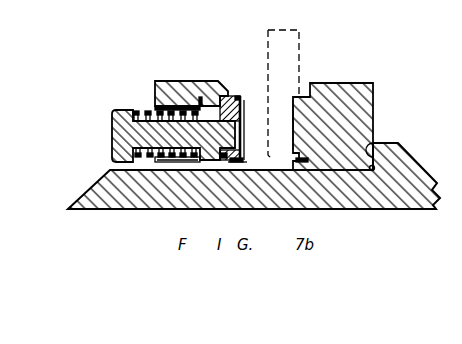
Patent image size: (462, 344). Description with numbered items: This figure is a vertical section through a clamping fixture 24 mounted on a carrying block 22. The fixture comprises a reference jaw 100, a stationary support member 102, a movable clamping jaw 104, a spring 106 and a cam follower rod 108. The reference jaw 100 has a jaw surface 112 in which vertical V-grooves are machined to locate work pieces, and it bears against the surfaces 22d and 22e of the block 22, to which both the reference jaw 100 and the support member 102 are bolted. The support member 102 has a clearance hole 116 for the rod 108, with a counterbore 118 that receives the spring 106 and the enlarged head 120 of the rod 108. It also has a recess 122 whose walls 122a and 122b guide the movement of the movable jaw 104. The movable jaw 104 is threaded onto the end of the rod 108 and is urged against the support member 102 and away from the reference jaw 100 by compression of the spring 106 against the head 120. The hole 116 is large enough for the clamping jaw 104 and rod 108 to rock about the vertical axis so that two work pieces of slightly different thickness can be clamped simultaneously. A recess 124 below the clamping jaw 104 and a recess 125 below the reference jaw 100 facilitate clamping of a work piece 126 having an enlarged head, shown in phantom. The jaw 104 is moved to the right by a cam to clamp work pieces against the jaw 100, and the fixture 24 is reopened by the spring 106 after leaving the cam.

The carrying block 22 is at (407, 170).
The surface of the block 22d is at (370, 168).
The surface of the block 22e is at (367, 146).
The clamping fixture 24 is at (383, 84).
The reference jaw 100 is at (347, 88).
The support member 102 is at (172, 81).
The movable clamping jaw 104 is at (240, 98).
The spring 106 is at (145, 112).
The cam follower rod 108 is at (150, 154).
The jaw surface 112 is at (299, 141).
The clearance hole 116 is at (197, 157).
The counterbore 118 is at (202, 103).
The enlarged head 120 is at (113, 117).
The recess 122 is at (241, 116).
The wall of the recess 122a is at (238, 96).
The wall of the recess 122b is at (243, 162).
The recess below the clamping jaw 124 is at (238, 163).
The recess below the reference jaw 125 is at (302, 166).
The work piece 126 is at (300, 31).